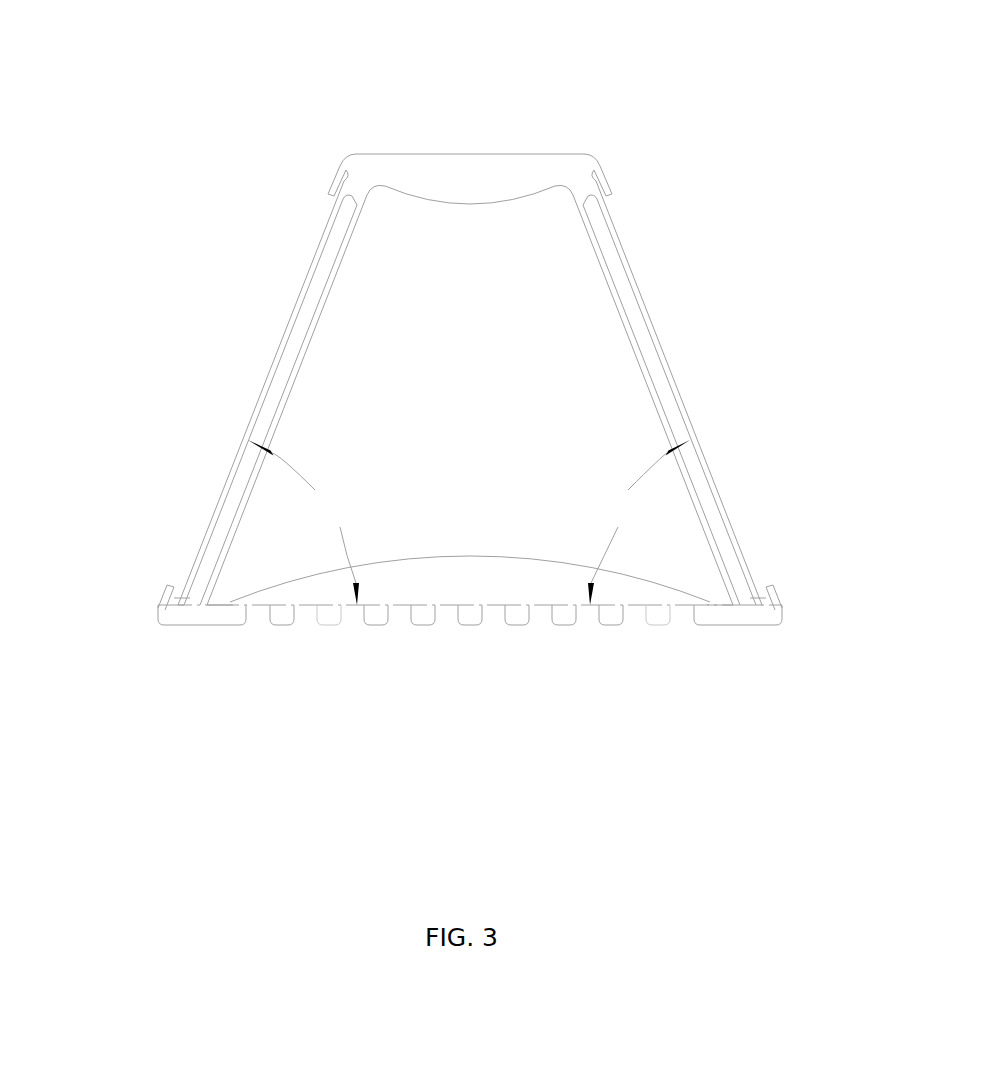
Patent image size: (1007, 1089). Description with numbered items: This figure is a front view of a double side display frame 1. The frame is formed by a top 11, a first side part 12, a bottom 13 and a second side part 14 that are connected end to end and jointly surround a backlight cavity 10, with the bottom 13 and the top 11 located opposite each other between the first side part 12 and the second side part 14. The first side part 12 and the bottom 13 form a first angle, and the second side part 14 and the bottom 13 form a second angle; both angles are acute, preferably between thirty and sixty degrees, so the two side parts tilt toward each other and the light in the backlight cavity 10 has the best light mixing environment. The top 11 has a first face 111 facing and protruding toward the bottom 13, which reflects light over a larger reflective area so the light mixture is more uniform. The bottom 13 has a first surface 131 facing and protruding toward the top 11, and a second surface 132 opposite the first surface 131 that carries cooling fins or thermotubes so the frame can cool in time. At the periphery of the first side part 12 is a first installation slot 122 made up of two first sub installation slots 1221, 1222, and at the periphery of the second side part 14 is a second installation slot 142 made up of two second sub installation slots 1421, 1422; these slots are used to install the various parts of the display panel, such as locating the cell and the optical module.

The double side display frame 1 is at (588, 100).
The backlight cavity 10 is at (545, 290).
The top 11 is at (455, 178).
The first face 111 is at (415, 195).
The first side part 12 is at (287, 350).
The first installation slot 122 is at (247, 750).
The first sub installation slot 1221 is at (162, 622).
The first sub installation slot 1222 is at (195, 610).
The bottom 13 is at (460, 578).
The first surface 131 is at (515, 560).
The second surface 132 is at (235, 624).
The second side part 14 is at (667, 375).
The second installation slot 142 is at (817, 747).
The second sub installation slot 1421 is at (772, 608).
The second sub installation slot 1422 is at (746, 606).